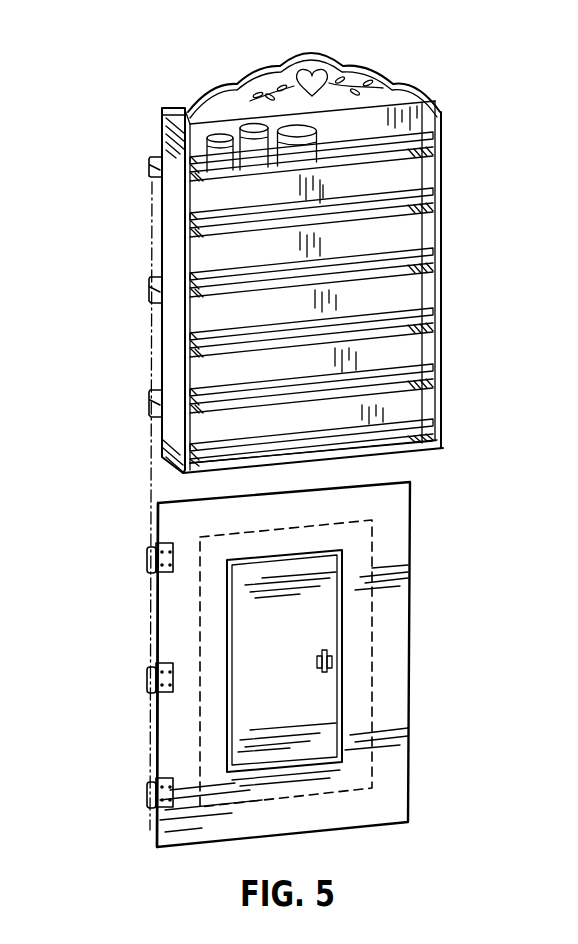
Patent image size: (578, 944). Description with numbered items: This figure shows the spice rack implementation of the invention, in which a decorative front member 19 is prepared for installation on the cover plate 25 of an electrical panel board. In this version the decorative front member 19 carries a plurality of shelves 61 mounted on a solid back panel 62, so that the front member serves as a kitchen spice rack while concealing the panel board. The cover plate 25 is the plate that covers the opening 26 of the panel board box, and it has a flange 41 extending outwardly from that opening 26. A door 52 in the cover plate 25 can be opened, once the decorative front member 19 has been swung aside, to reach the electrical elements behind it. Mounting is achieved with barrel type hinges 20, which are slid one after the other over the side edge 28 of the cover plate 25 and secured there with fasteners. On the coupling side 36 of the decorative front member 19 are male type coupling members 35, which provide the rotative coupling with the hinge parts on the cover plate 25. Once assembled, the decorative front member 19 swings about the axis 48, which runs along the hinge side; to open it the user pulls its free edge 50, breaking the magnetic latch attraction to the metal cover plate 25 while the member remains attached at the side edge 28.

The decorative front member 19 is at (459, 80).
The barrel type hinges 20 is at (140, 560).
The cover plate 25 is at (435, 505).
The opening 26 is at (362, 598).
The side edge 28 is at (160, 831).
The male type coupling members 35 is at (147, 170).
The coupling side 36 is at (160, 426).
The flange 41 is at (397, 783).
The axis 48 is at (150, 456).
The edge 50 is at (441, 378).
The door 52 is at (297, 697).
The shelves 61 is at (425, 250).
The solid back panel 62 is at (395, 297).